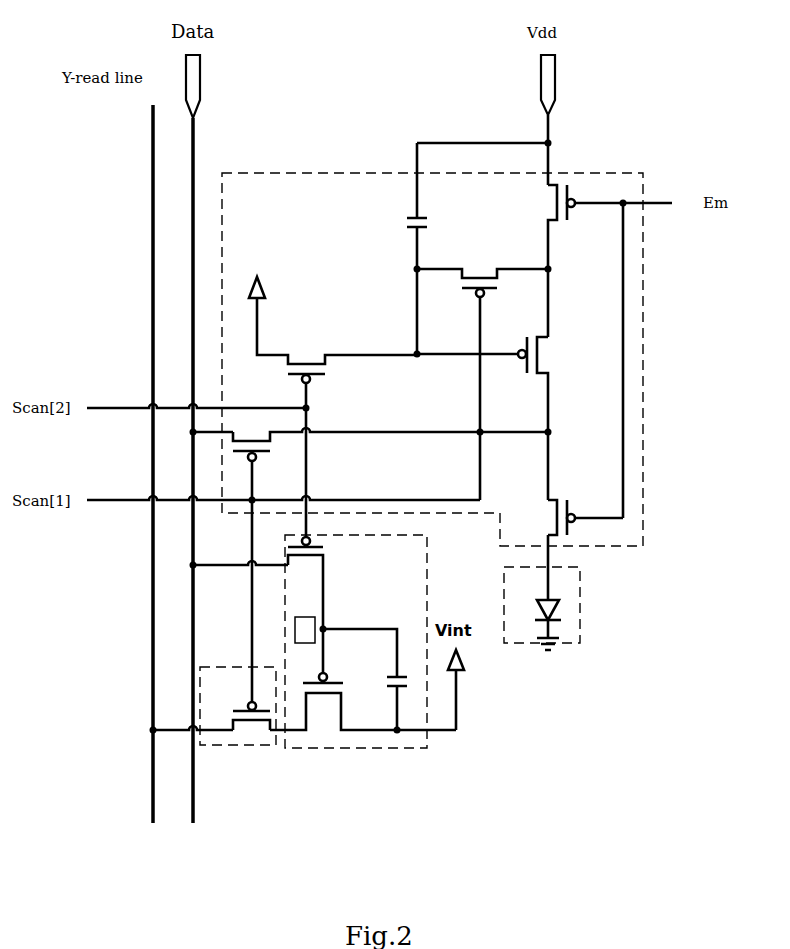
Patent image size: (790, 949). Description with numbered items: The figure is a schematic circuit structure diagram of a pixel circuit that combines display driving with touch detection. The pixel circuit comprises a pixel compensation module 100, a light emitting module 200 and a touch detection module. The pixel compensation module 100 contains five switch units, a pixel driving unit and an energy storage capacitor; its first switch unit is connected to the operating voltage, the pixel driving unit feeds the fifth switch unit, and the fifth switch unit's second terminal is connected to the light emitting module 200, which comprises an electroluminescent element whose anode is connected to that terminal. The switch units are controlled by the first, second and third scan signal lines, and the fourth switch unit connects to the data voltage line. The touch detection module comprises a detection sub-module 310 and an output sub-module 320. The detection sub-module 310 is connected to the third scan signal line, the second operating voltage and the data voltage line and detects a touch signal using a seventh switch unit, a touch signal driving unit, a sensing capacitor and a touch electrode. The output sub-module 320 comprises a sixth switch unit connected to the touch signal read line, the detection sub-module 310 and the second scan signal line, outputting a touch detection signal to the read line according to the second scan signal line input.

The pixel compensation module 100 is at (595, 178).
The light emitting module 200 is at (565, 590).
The detection sub-module 310 is at (387, 740).
The output sub-module 320 is at (237, 740).